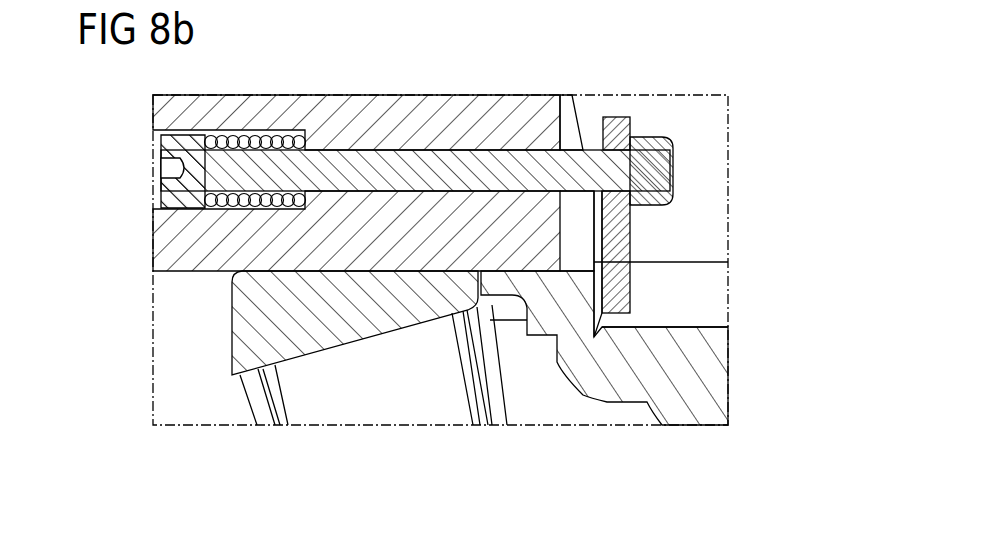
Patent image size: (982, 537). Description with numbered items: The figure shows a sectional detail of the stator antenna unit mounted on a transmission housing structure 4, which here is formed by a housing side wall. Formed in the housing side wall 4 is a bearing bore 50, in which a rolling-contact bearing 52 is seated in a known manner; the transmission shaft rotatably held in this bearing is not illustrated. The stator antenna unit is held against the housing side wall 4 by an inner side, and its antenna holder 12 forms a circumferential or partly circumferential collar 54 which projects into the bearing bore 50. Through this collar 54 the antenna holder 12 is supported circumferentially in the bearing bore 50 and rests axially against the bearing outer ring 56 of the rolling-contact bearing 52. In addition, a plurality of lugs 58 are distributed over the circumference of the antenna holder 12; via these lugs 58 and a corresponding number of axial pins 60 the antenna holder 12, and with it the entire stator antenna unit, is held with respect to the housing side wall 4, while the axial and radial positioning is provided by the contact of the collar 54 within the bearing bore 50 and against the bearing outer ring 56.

The transmission housing structure 4 is at (474, 96).
The antenna holder 12 is at (698, 376).
The bearing bore 50 is at (175, 270).
The rolling-contact bearing 52 is at (370, 402).
The collar 54 is at (537, 288).
The bearing outer ring 56 is at (256, 319).
The lug 58 is at (610, 117).
The axial pin 60 is at (397, 170).